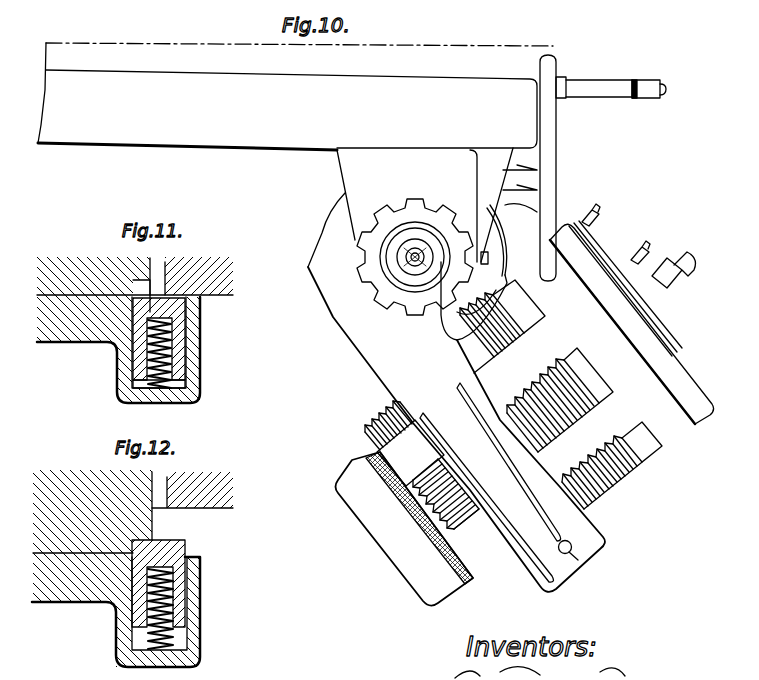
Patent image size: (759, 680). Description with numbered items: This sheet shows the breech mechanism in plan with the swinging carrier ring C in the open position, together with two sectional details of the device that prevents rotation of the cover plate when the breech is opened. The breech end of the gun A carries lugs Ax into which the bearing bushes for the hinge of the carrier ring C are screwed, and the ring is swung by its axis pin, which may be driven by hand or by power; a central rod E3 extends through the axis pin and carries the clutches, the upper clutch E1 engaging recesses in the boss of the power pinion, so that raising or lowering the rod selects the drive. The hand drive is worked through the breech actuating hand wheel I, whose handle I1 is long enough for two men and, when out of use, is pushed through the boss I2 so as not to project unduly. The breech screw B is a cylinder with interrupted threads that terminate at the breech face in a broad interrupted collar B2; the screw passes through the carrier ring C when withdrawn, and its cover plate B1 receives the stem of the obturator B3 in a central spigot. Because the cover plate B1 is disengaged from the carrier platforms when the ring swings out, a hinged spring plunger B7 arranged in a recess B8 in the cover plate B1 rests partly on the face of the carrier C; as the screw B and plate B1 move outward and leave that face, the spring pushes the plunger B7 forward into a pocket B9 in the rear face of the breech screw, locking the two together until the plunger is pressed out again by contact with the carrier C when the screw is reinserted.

In FIG. 10, the breech end of the gun A is at (295, 96).
In FIG. 10, the lugs on the gun Ax is at (407, 206).
In FIG. 10, the breech actuating hand wheel I is at (550, 150).
In FIG. 10, the handle I1 is at (582, 88).
In FIG. 10, the boss I2 is at (583, 67).
In FIG. 10, the upper clutch E1 is at (403, 233).
In FIG. 10, the central rod E3 is at (418, 250).
In FIG. 10, the swinging carrier ring C is at (456, 392).
In FIG. 11, the swinging carrier ring C is at (210, 297).
In FIG. 12, the swinging carrier ring C is at (207, 508).
In FIG. 10, the breech screw B is at (422, 465).
In FIG. 11, the breech screw B is at (75, 267).
In FIG. 12, the breech screw B is at (92, 511).
In FIG. 10, the cover plate B1 is at (678, 383).
In FIG. 11, the cover plate B1 is at (88, 323).
In FIG. 12, the cover plate B1 is at (92, 585).
In FIG. 10, the interrupted collar B2 is at (540, 304).
In FIG. 10, the obturator B3 is at (373, 545).
In FIG. 11, the spring plunger B7 is at (180, 330).
In FIG. 12, the spring plunger B7 is at (180, 578).
In FIG. 11, the recess B8 is at (175, 388).
In FIG. 12, the recess B8 is at (180, 637).
In FIG. 11, the pocket B9 is at (167, 270).
In FIG. 12, the pocket B9 is at (153, 540).